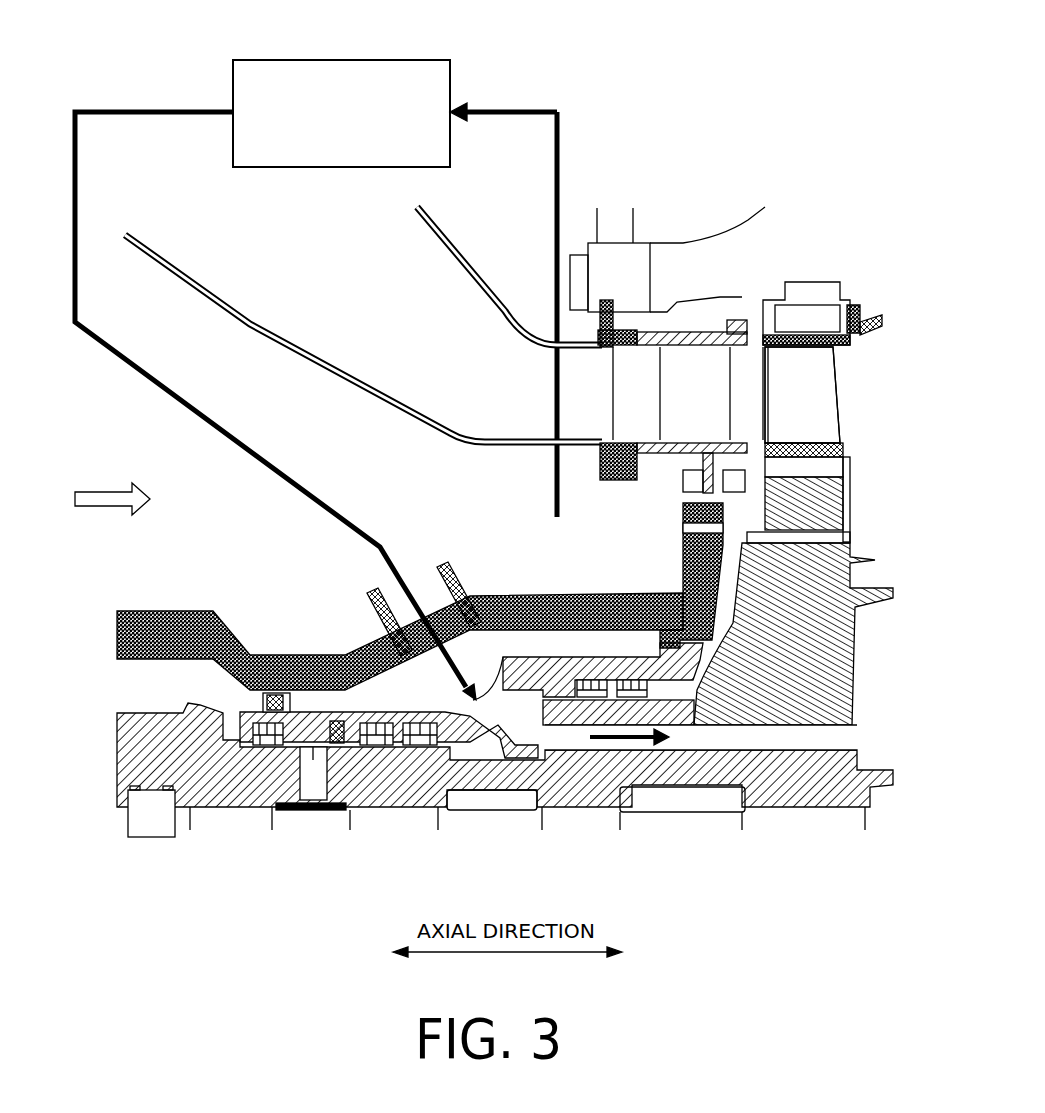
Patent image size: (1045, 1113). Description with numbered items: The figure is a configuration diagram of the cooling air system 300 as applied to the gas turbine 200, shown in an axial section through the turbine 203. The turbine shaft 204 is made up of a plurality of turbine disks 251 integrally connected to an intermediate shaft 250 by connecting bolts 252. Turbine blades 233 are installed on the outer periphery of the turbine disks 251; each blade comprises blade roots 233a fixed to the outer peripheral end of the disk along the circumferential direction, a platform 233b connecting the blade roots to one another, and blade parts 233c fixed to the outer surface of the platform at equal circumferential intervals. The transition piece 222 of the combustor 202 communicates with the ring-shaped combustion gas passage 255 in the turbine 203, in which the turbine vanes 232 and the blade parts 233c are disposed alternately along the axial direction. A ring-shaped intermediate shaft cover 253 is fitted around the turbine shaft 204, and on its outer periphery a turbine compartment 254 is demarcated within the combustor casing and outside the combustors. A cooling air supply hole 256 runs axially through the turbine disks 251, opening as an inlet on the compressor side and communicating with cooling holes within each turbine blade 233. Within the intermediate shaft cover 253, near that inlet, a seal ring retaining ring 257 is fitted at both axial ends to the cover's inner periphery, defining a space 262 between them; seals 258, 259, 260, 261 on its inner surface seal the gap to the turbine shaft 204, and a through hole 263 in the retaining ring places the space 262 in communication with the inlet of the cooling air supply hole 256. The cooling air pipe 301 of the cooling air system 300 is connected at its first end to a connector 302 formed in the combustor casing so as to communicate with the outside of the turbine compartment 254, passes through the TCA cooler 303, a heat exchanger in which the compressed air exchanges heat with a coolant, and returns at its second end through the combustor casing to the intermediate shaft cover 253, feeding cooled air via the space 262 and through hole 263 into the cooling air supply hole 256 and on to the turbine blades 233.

The gas turbine 200 is at (743, 64).
The combustor 202 is at (468, 246).
The turbine 203 is at (783, 196).
The turbine shaft 204 is at (111, 757).
The transition piece 222 is at (506, 302).
The turbine vane 232 is at (690, 365).
The turbine blade 233 is at (845, 442).
The blade root 233a is at (840, 493).
The platform 233b is at (838, 455).
The blade part 233c is at (830, 396).
The intermediate shaft 250 is at (428, 762).
The turbine disk 251 is at (808, 790).
The connecting bolt 252 is at (488, 818).
The intermediate shaft cover 253 is at (180, 610).
The turbine compartment 254 is at (472, 524).
The combustion gas passage 255 is at (745, 370).
The cooling air supply hole 256 is at (665, 750).
The seal ring retaining ring 257 is at (234, 787).
The seal 258 is at (334, 745).
The seal 259 is at (247, 748).
The seal 260 is at (545, 737).
The seal 261 is at (655, 707).
The space 262 is at (367, 687).
The through hole 263 is at (494, 665).
The cooling air system 300 is at (316, 354).
The cooling air pipe 301 is at (493, 110).
The connector 302 is at (346, 581).
The TCA cooler 303 is at (388, 60).